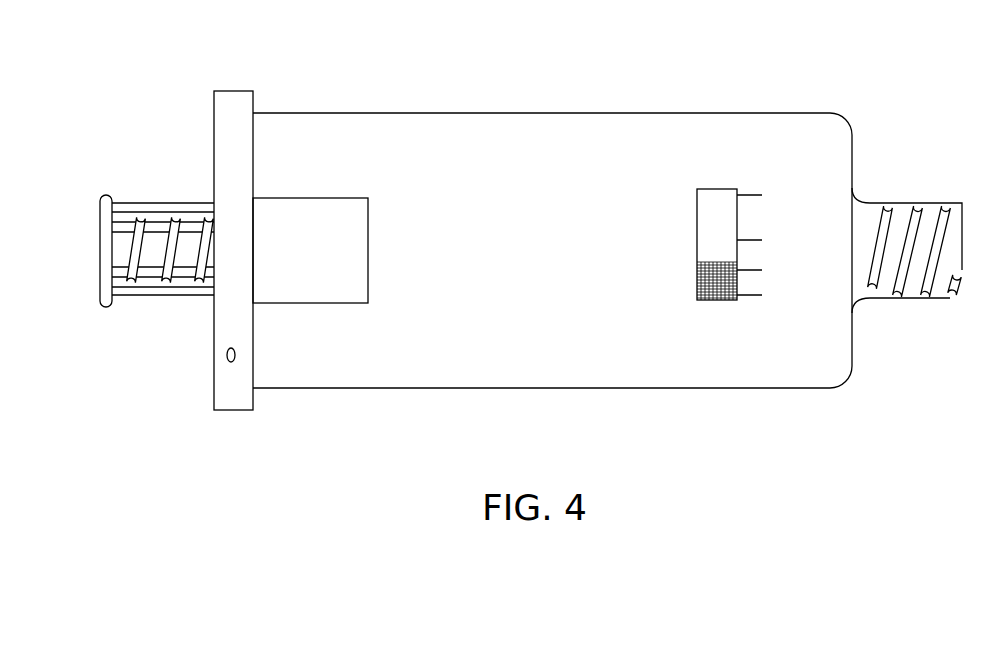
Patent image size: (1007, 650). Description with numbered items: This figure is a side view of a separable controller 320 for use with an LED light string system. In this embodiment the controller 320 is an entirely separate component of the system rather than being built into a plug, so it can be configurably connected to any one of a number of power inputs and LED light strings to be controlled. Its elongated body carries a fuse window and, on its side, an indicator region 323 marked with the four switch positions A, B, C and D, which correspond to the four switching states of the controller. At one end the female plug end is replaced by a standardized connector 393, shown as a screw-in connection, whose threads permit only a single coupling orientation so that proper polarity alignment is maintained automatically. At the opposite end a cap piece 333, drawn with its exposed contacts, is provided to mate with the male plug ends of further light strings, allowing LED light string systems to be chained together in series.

The controller 320 is at (480, 113).
The indicator window 323 is at (717, 188).
The cap piece 333 is at (143, 297).
The standardized connector 393 is at (915, 203).